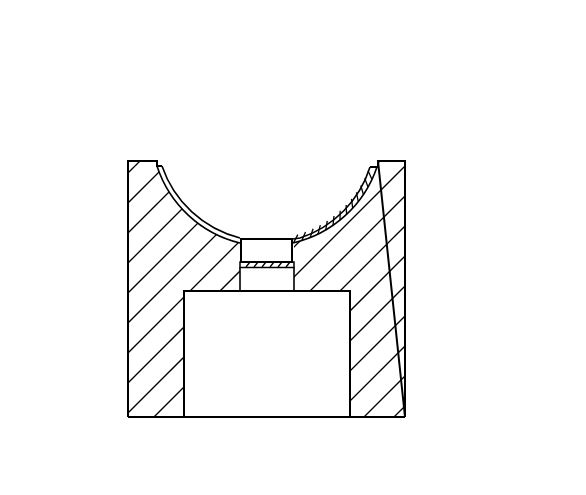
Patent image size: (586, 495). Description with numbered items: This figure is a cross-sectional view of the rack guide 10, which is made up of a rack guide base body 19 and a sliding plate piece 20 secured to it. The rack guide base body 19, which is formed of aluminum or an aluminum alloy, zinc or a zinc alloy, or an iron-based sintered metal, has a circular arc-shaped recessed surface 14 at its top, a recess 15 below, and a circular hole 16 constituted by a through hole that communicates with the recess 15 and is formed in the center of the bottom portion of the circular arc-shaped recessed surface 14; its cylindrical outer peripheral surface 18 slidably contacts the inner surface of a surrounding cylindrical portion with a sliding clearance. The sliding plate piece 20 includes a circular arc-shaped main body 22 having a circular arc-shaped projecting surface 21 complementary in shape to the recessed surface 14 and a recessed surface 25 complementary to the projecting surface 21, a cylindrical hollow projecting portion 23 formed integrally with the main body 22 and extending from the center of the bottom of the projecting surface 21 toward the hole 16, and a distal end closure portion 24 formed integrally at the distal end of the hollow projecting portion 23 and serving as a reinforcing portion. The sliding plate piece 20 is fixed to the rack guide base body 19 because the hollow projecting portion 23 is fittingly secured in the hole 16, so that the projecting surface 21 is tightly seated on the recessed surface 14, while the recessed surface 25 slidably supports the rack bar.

The rack guide 10 is at (411, 167).
The circular arc-shaped recessed surface 14 is at (213, 226).
The recess 15 is at (184, 370).
The circular hole 16 is at (241, 279).
The cylindrical outer peripheral surface 18 is at (407, 330).
The rack guide base body 19 is at (398, 248).
The sliding plate piece 20 is at (355, 204).
The circular arc-shaped projecting surface 21 is at (173, 205).
The circular arc-shaped main body 22 is at (308, 237).
The cylindrical hollow projecting portion 23 is at (238, 257).
The distal end closure portion 24 is at (275, 266).
The recessed surface 25 is at (187, 203).